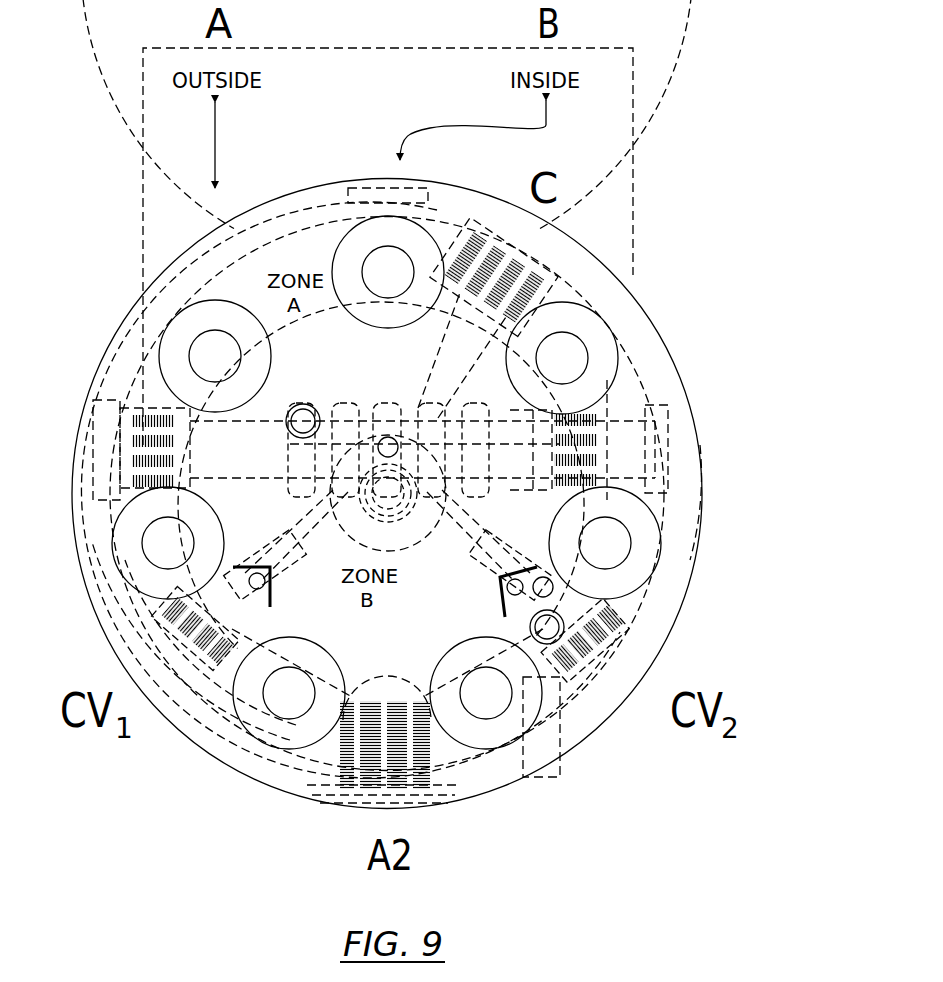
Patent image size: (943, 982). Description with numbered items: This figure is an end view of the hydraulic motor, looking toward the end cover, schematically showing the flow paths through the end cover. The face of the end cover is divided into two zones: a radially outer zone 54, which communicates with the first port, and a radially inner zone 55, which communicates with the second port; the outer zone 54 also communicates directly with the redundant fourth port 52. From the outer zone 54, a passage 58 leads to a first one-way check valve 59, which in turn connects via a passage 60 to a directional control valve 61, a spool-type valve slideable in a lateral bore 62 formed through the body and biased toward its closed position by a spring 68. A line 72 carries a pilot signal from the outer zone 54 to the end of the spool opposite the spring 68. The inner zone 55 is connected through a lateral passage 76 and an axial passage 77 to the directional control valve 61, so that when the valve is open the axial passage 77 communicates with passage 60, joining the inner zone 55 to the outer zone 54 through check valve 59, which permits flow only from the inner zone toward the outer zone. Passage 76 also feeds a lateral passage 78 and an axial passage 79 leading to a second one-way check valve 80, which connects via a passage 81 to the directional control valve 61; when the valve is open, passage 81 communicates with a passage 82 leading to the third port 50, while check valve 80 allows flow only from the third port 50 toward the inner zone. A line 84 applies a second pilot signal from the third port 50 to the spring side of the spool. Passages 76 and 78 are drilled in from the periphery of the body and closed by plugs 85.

The C port 50 is at (550, 225).
The A2 port 52 is at (413, 792).
The radially outer zone 54 is at (250, 293).
The radially inner zone 55 is at (388, 661).
The passage 58 is at (215, 592).
The first one-way check valve 59 is at (187, 700).
The passage 60 is at (323, 553).
The directional control valve 61 is at (353, 390).
The lateral bore 62 is at (685, 476).
The spring 68 is at (602, 409).
The line 72 is at (175, 415).
The lateral passage 76 is at (500, 440).
The axial passage 77 is at (306, 416).
The lateral passage 78 is at (547, 533).
The axial passage 79 is at (560, 627).
The second one-way check valve 80 is at (636, 640).
The passage 81 is at (448, 575).
The passage 82 is at (455, 362).
The line 84 is at (517, 362).
The plugs 85 is at (677, 430).